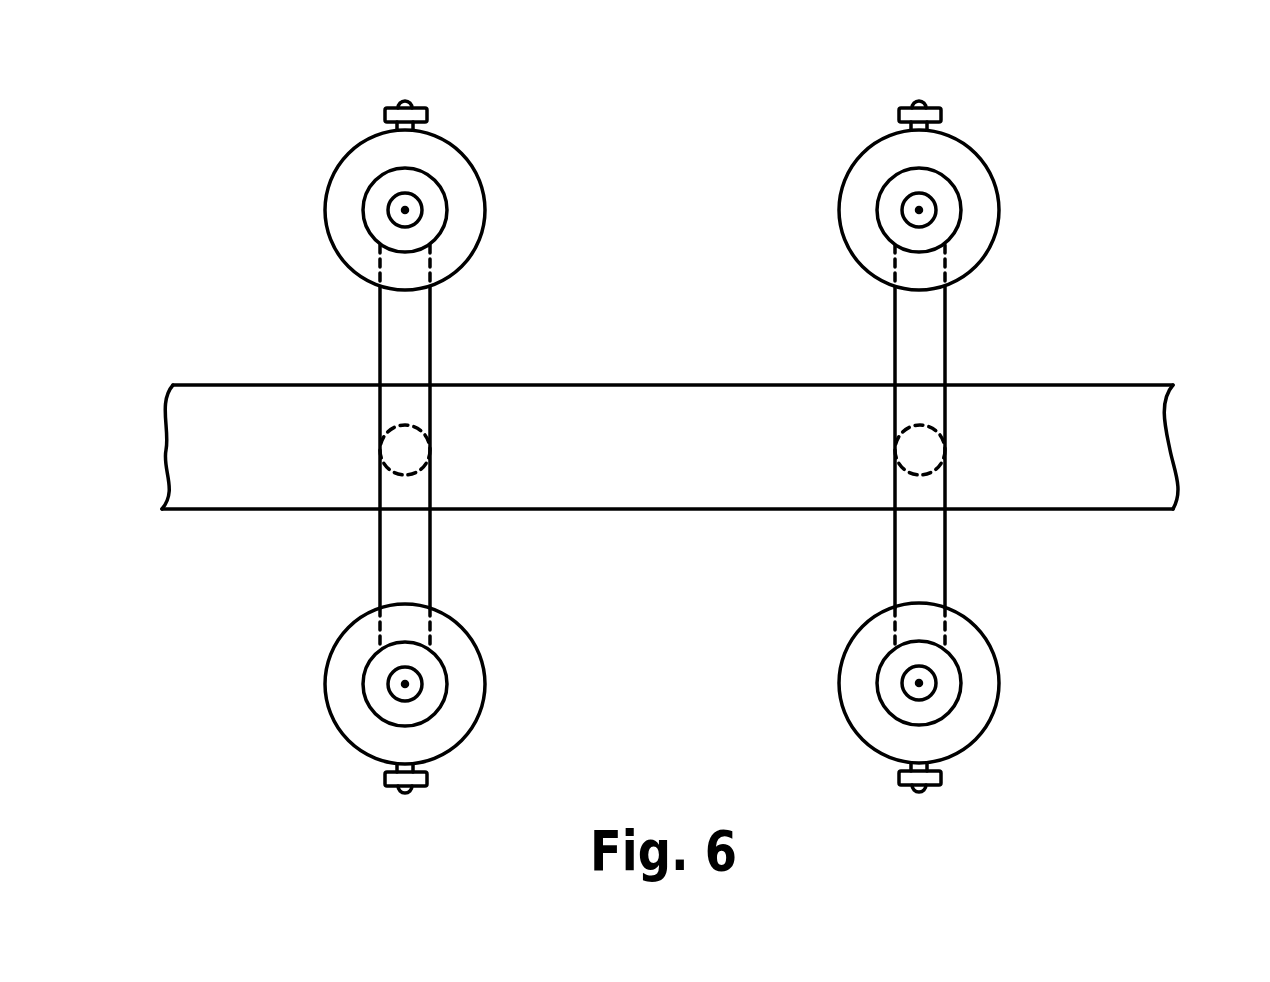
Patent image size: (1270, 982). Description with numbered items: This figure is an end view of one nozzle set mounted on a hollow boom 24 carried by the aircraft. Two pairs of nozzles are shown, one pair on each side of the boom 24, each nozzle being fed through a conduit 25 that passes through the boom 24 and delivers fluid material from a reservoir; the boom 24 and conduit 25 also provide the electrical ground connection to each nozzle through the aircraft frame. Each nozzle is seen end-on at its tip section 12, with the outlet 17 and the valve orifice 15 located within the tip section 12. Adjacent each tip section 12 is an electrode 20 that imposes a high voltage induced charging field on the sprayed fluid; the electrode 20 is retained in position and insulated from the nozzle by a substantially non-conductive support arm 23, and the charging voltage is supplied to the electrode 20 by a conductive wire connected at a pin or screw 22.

The tip section 12 is at (957, 185).
The valve orifice 15 is at (919, 210).
The outlet 17 is at (936, 208).
The electrode 20 is at (482, 185).
The pin or screw 22 is at (403, 102).
The support arm 23 is at (430, 110).
The hollow boom 24 is at (1122, 384).
The conduit 25 is at (430, 338).